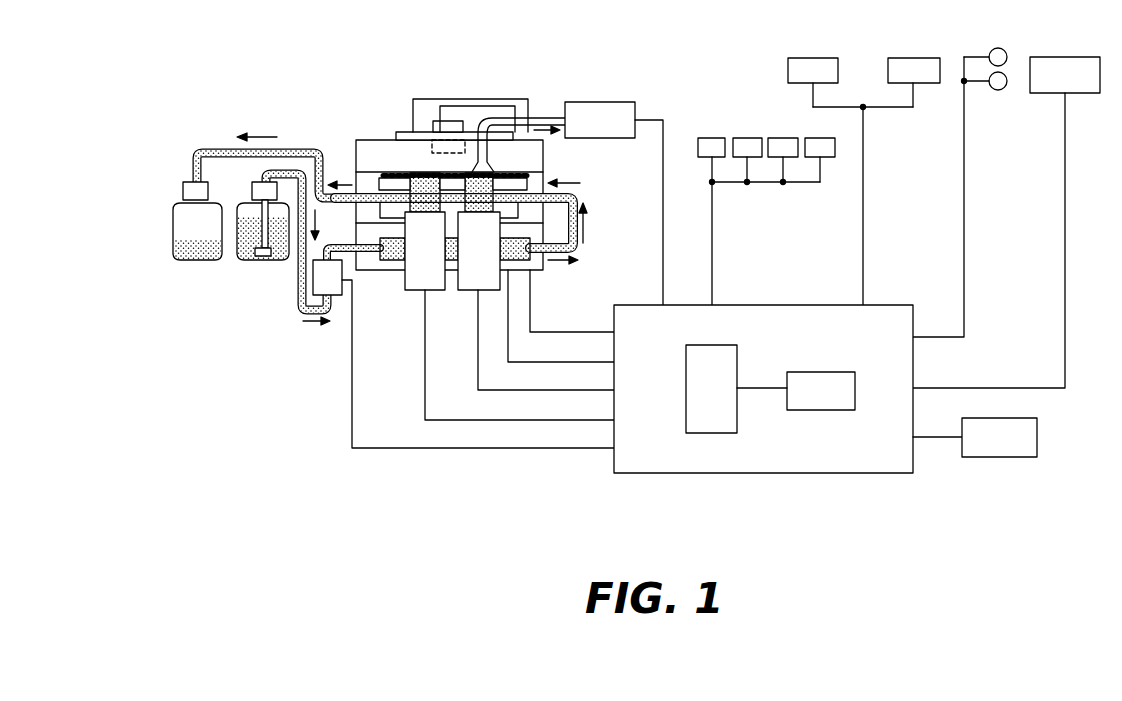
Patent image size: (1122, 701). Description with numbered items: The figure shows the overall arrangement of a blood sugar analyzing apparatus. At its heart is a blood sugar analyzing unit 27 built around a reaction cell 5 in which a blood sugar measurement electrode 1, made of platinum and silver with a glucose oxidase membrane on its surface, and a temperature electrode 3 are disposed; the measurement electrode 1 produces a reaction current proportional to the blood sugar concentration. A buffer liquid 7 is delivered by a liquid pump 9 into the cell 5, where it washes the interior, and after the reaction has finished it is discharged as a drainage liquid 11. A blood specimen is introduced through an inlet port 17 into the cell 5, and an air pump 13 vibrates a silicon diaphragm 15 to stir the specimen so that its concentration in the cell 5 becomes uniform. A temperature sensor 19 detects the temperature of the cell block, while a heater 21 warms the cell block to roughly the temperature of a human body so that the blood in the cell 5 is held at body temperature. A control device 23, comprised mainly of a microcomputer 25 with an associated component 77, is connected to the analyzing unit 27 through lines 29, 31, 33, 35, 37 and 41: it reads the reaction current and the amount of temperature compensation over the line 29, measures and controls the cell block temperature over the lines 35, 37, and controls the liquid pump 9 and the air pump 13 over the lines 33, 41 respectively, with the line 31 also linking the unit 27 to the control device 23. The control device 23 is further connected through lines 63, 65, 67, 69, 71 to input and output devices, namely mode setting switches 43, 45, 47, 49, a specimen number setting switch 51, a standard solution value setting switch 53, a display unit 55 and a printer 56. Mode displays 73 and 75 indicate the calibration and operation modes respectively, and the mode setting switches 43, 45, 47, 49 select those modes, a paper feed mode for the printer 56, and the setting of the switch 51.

The blood sugar measurement electrode 1 is at (420, 292).
The temperature electrode 3 is at (470, 292).
The reaction cell 5 is at (385, 185).
The buffer liquid 7 is at (272, 262).
The liquid pump 9 is at (328, 298).
The drainage liquid 11 is at (205, 262).
The air pump 13 is at (596, 102).
The silicon diaphragm 15 is at (500, 172).
The inlet port 17 is at (485, 183).
The temperature sensor 19 is at (447, 121).
The heater 21 is at (398, 132).
The control device 23 is at (763, 409).
The microcomputer 25 is at (715, 345).
The blood sugar analyzing unit 27 is at (413, 85).
The line 29 is at (425, 401).
The line 31 is at (478, 386).
The line 33 is at (352, 437).
The line 35 is at (462, 99).
The line 37 is at (480, 106).
The line 41 is at (663, 245).
The mode setting switch 43 is at (712, 138).
The mode setting switch 45 is at (747, 138).
The mode setting switch 47 is at (783, 138).
The mode setting switch 49 is at (820, 138).
The specimen number setting switch 51 is at (826, 40).
The standard solution value setting switch 53 is at (928, 40).
The display unit 55 is at (1090, 45).
The printer 56 is at (1038, 437).
The line 63 is at (712, 246).
The line 65 is at (863, 246).
The line 67 is at (930, 337).
The line 69 is at (935, 388).
The line 71 is at (946, 438).
The mode display 73 is at (1015, 42).
The mode display 75 is at (999, 90).
The memory 77 is at (832, 372).